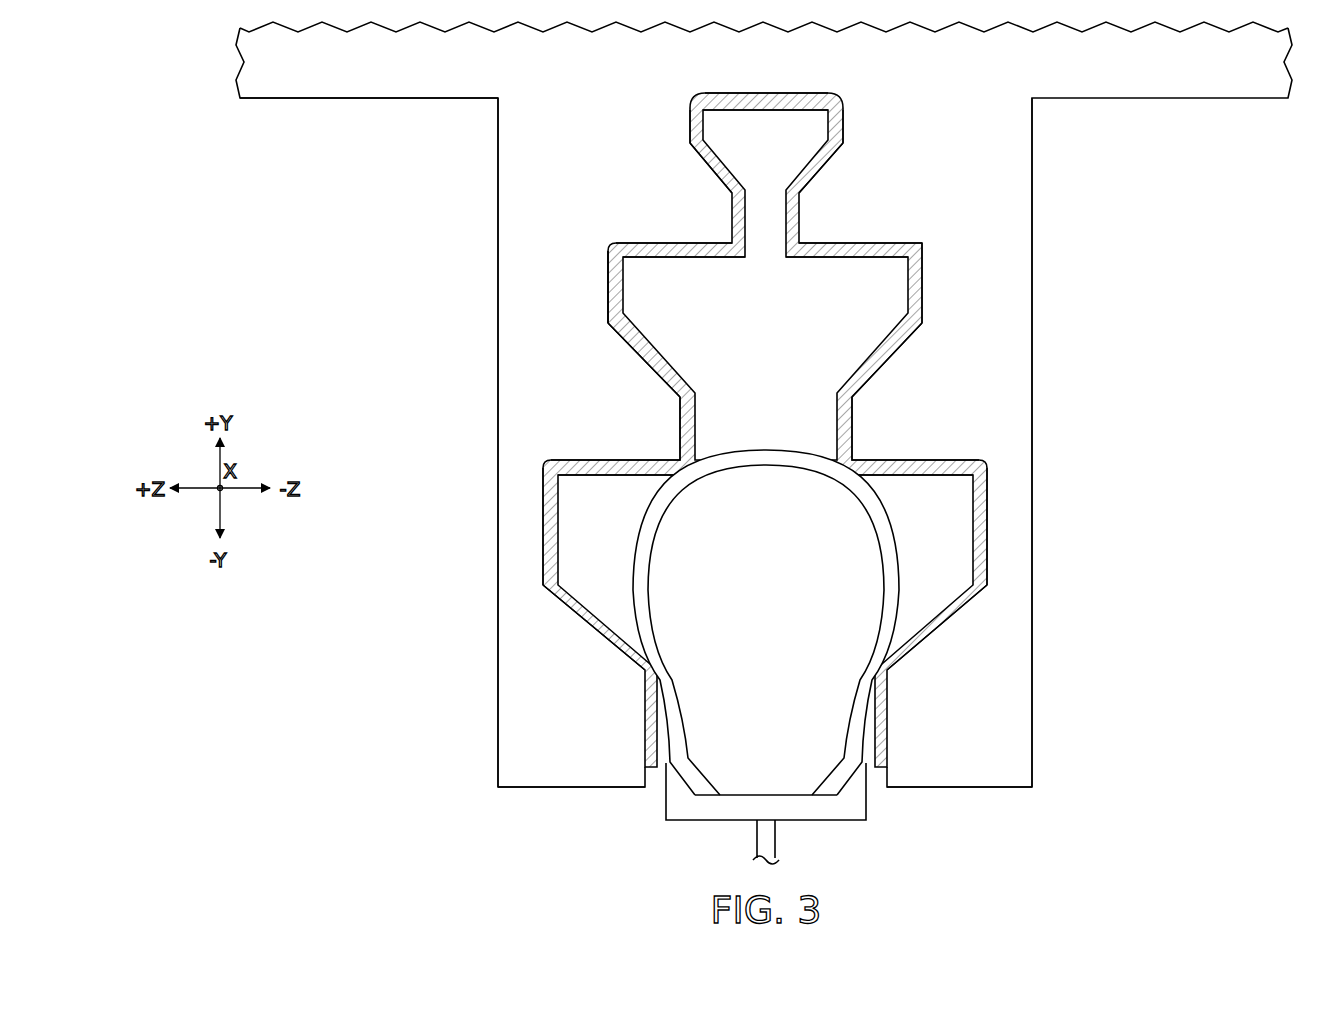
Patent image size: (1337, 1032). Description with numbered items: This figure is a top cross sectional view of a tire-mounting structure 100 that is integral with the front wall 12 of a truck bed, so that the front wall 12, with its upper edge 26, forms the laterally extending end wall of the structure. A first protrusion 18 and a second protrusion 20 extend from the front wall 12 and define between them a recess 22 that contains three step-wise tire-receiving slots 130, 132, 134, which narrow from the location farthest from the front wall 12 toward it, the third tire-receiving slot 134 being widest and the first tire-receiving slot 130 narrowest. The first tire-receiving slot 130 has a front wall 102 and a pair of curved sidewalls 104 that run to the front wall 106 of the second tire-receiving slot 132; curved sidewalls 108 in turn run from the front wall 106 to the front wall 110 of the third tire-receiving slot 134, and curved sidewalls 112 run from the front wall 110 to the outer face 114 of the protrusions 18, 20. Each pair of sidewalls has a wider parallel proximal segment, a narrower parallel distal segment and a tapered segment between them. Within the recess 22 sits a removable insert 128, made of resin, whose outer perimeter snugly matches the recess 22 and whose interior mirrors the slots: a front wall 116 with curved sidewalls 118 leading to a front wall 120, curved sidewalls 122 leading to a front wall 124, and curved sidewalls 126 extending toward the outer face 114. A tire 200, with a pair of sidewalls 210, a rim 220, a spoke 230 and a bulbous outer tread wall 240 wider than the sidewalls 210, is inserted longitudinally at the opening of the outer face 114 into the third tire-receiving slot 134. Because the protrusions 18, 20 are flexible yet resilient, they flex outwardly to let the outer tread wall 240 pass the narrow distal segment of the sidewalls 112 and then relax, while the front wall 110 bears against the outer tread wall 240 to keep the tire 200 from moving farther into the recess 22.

The front wall 12 is at (417, 100).
The first protrusion 18 is at (510, 152).
The second protrusion 20 is at (1024, 333).
The recess 22 is at (750, 83).
The upper edge 26 is at (322, 87).
The tire-mounting structure 100 is at (589, 430).
The front wall 102 is at (722, 93).
The curved sidewalls 104 is at (690, 118).
The front wall 106 is at (662, 243).
The curved sidewalls 108 is at (608, 283).
The front wall 110 is at (612, 460).
The curved sidewalls 112 is at (543, 520).
The outer face 114 is at (570, 787).
The front wall 116 is at (722, 112).
The curved sidewalls 118 is at (715, 170).
The front wall 120 is at (683, 257).
The curved sidewalls 122 is at (656, 352).
The front wall 124 is at (607, 475).
The curved sidewalls 126 is at (561, 543).
The insert 128 is at (622, 340).
The first tire-receiving slot 130 is at (833, 86).
The second tire-receiving slot 132 is at (930, 233).
The third tire-receiving slot 134 is at (980, 443).
The tire 200 is at (754, 647).
The sidewalls 210 is at (665, 718).
The rim 220 is at (830, 808).
The spoke 230 is at (757, 838).
The outer tread wall 240 is at (766, 450).